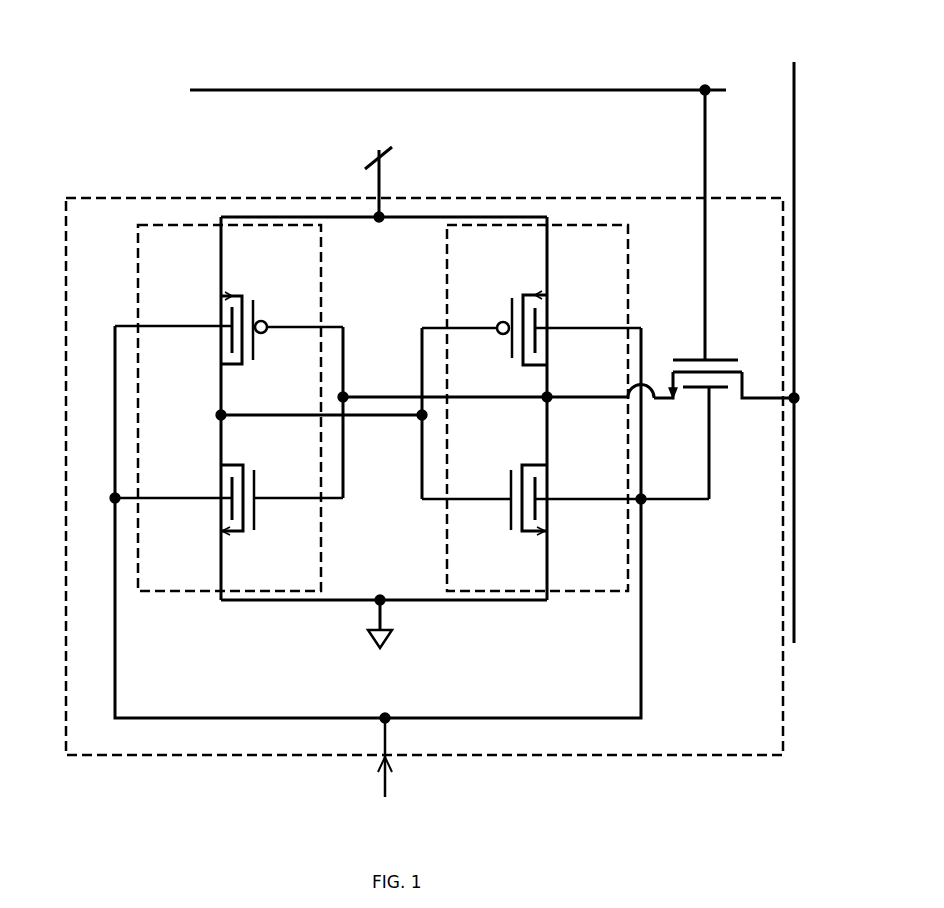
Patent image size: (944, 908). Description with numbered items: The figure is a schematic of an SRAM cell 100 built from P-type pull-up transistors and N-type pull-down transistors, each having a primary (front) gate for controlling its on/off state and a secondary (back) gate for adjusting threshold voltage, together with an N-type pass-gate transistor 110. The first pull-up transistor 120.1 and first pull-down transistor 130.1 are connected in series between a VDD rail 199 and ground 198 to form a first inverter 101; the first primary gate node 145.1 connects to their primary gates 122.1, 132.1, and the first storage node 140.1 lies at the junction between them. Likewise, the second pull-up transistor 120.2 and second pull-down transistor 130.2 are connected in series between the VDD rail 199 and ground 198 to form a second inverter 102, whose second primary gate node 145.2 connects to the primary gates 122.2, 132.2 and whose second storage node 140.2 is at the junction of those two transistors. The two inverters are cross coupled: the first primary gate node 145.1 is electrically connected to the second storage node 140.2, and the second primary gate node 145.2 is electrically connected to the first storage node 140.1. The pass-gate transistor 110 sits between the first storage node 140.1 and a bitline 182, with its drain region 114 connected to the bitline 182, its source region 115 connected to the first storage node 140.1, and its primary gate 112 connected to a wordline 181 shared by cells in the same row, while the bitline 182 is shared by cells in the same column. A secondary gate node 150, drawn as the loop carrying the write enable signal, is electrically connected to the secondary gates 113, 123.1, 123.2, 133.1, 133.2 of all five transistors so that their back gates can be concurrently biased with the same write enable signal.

The SRAM cell 100 is at (125, 186).
The first inverter 101 is at (587, 591).
The second inverter 102 is at (177, 592).
The pass-gate transistor 110 is at (726, 294).
The primary gate of the pass-gate transistor 112 is at (693, 352).
The secondary gate of the pass-gate transistor 113 is at (717, 403).
The drain region 114 is at (755, 402).
The source region 115 is at (660, 399).
The first pull-up transistor 120.1 is at (531, 322).
The second pull-up transistor 120.2 is at (229, 318).
The primary gate of the first pull-up transistor 122.1 is at (498, 340).
The primary gate of the second pull-up transistor 122.2 is at (293, 349).
The secondary gate of the first pull-up transistor 123.1 is at (555, 317).
The secondary gate of the second pull-up transistor 123.2 is at (204, 313).
The first pull-down transistor 130.1 is at (565, 516).
The second pull-down transistor 130.2 is at (229, 513).
The primary gate of the first pull-down transistor 132.1 is at (502, 483).
The primary gate of the second pull-down transistor 132.2 is at (285, 477).
The secondary gate of the first pull-down transistor 133.1 is at (553, 490).
The secondary gate of the second pull-down transistor 133.2 is at (212, 485).
The first storage node 140.1 is at (543, 405).
The second storage node 140.2 is at (226, 412).
The first primary gate node 145.1 is at (418, 427).
The second primary gate node 145.2 is at (345, 392).
The secondary gate node 150 is at (385, 715).
The wordline 181 is at (428, 90).
The bitline 182 is at (795, 628).
The ground 198 is at (376, 640).
The VDD rail 199 is at (393, 152).